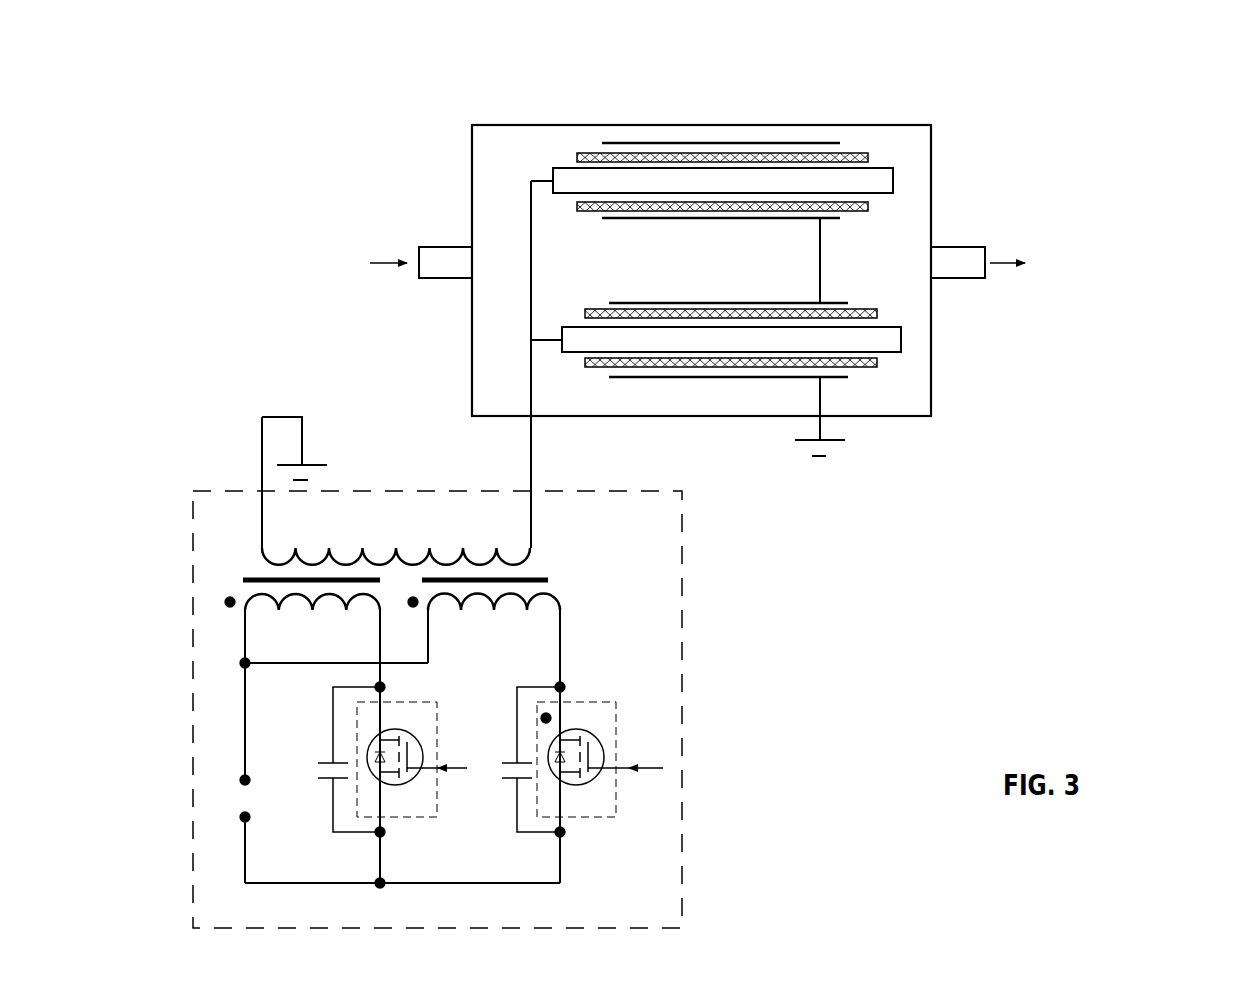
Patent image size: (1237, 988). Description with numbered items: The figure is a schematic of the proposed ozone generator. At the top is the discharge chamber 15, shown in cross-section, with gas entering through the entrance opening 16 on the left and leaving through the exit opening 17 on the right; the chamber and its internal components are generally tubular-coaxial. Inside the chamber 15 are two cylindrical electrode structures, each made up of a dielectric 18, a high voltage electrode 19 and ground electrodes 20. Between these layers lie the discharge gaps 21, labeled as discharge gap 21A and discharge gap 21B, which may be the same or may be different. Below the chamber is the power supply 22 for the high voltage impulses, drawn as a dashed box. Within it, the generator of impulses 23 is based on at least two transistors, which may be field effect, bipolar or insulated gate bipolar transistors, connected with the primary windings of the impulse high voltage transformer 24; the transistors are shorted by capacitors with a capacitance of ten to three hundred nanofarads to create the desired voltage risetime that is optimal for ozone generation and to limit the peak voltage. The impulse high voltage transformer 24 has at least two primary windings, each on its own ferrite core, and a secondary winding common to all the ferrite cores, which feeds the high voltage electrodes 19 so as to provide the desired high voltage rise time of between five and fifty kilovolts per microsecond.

The discharge chamber 15 is at (472, 200).
The entrance opening 16 is at (381, 241).
The exit opening 17 is at (1046, 254).
The dielectric 18 is at (870, 155).
The high voltage electrodes 19 is at (562, 327).
The ground electrodes 20 is at (905, 505).
The discharge gaps 21 is at (577, 163).
The discharge gap 21A is at (843, 145).
The discharge gap 21B is at (893, 170).
The power supply 22 is at (477, 709).
The generator of impulses 23 is at (535, 623).
The impulse high voltage transformer 24 is at (461, 497).